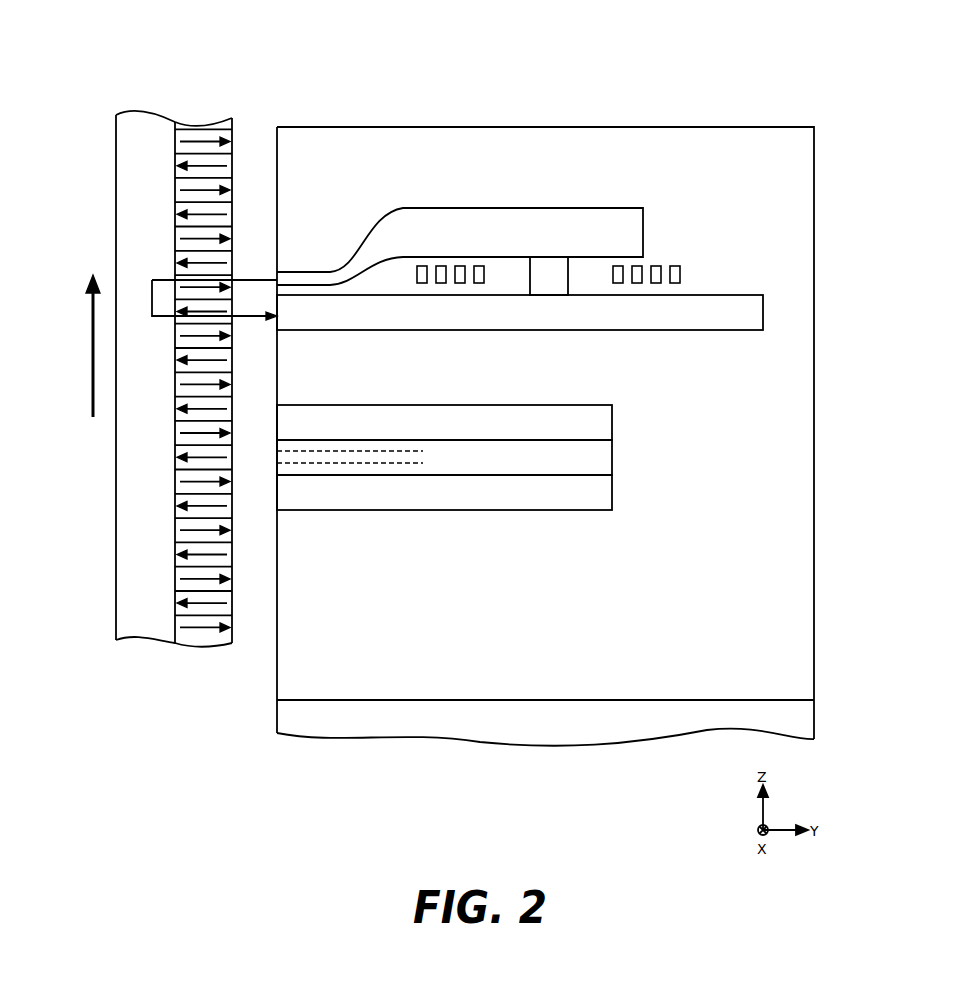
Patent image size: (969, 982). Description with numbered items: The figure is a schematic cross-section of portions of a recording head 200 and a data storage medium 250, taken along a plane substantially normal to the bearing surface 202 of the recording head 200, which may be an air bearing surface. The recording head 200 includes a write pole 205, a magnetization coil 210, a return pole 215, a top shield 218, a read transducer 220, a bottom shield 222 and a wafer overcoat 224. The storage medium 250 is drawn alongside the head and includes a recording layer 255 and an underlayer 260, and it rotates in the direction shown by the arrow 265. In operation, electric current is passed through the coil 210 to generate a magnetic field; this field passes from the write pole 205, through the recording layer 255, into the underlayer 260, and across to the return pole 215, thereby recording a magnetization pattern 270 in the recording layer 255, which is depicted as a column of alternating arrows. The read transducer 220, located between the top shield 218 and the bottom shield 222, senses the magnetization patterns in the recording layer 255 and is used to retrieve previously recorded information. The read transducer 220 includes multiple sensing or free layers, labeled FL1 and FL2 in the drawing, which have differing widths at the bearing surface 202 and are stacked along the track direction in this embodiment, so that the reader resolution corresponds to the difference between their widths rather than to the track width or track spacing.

The recording head 200 is at (665, 84).
The bearing surface 202 is at (276, 675).
The write pole 205 is at (322, 270).
The magnetization coil 210 is at (458, 265).
The return pole 215 is at (462, 333).
The top shield 218 is at (527, 424).
The read transducer 220 is at (593, 460).
The bottom shield 222 is at (550, 493).
The wafer overcoat 224 is at (545, 530).
The data storage medium 250 is at (152, 652).
The recording layer 255 is at (195, 125).
The underlayer 260 is at (132, 618).
The arrow 265 is at (92, 348).
The magnetization pattern 270 is at (209, 138).
The first free layer FL1 is at (353, 451).
The second free layer FL2 is at (377, 463).